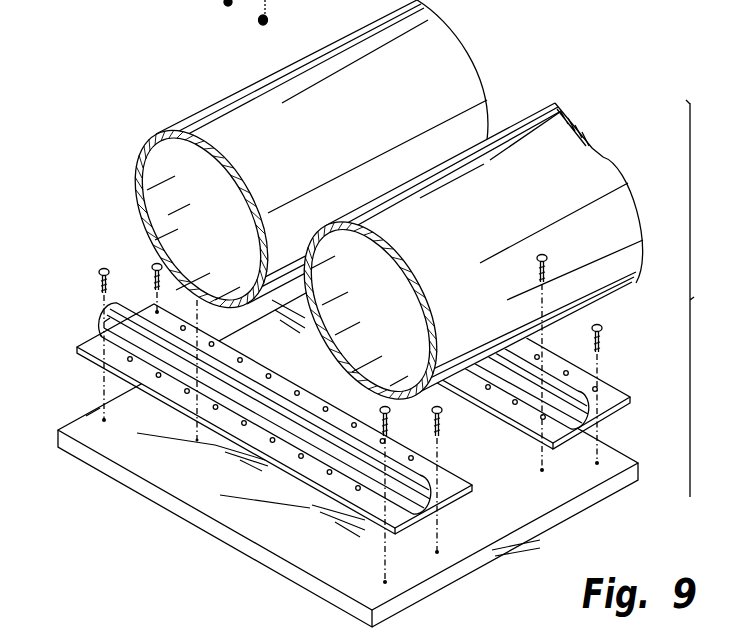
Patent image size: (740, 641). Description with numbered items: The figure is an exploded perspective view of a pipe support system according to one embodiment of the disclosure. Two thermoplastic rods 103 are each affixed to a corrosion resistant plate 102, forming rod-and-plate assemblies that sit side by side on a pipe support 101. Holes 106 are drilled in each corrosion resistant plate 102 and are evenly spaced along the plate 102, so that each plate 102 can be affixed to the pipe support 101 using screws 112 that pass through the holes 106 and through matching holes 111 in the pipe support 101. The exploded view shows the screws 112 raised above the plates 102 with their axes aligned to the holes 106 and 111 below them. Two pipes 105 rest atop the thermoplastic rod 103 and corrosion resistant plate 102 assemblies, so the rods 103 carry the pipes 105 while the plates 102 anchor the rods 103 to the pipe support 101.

The pipe support 101 is at (128, 482).
The corrosion resistant plate 102 is at (279, 383).
The thermoplastic rod 103 is at (211, 373).
The pipe 105 is at (154, 132).
The hole 106 is at (96, 337).
The hole 111 is at (94, 413).
The screw 112 is at (99, 282).